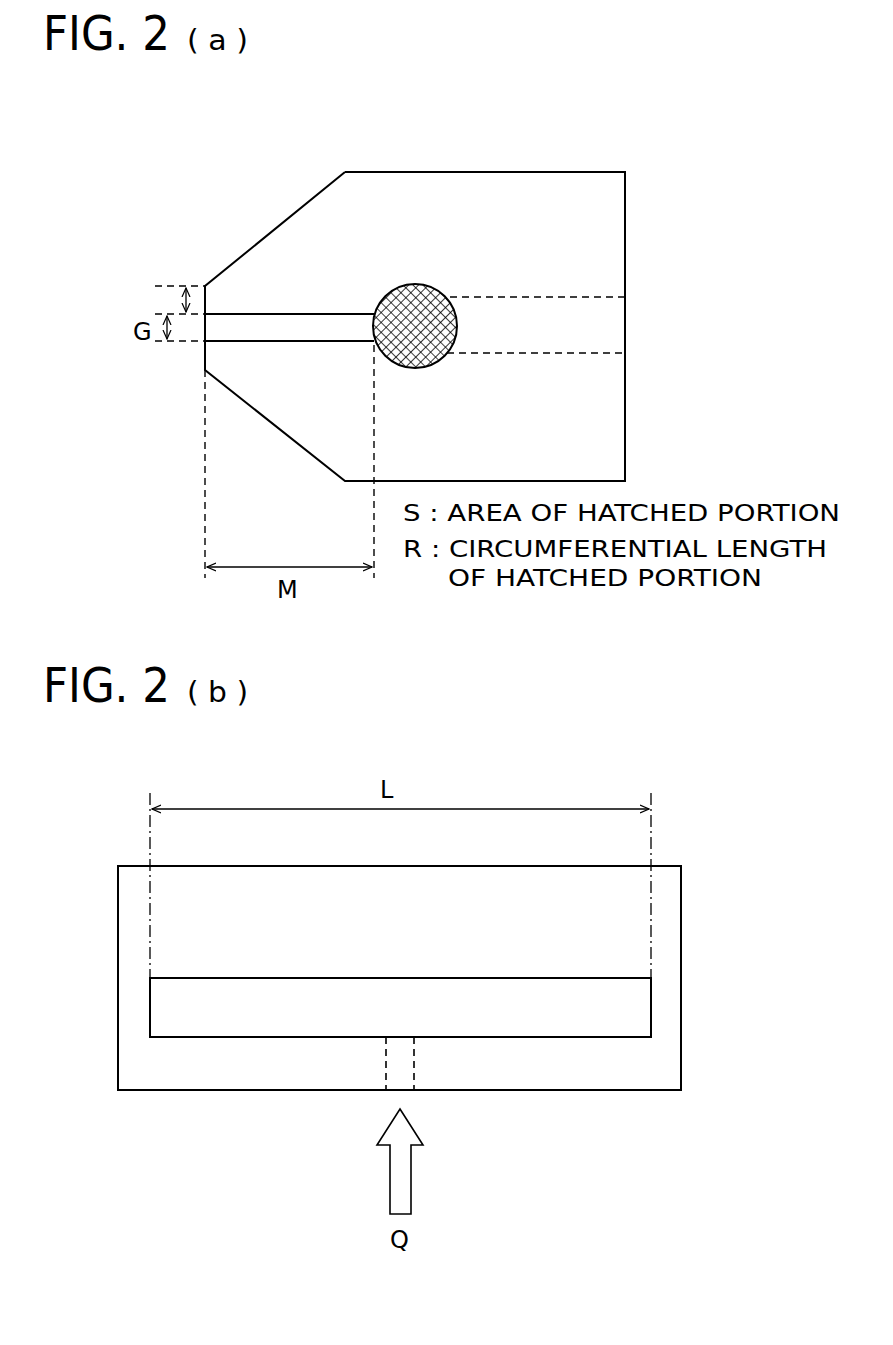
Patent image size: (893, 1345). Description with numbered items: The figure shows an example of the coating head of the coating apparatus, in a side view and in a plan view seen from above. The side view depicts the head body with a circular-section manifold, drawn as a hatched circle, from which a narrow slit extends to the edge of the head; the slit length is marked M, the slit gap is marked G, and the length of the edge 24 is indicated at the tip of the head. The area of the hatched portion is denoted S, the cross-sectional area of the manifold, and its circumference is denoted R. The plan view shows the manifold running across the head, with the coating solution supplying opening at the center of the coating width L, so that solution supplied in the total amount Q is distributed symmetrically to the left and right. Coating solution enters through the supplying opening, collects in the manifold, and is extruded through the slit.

The length of the edge 24 is at (185, 300).